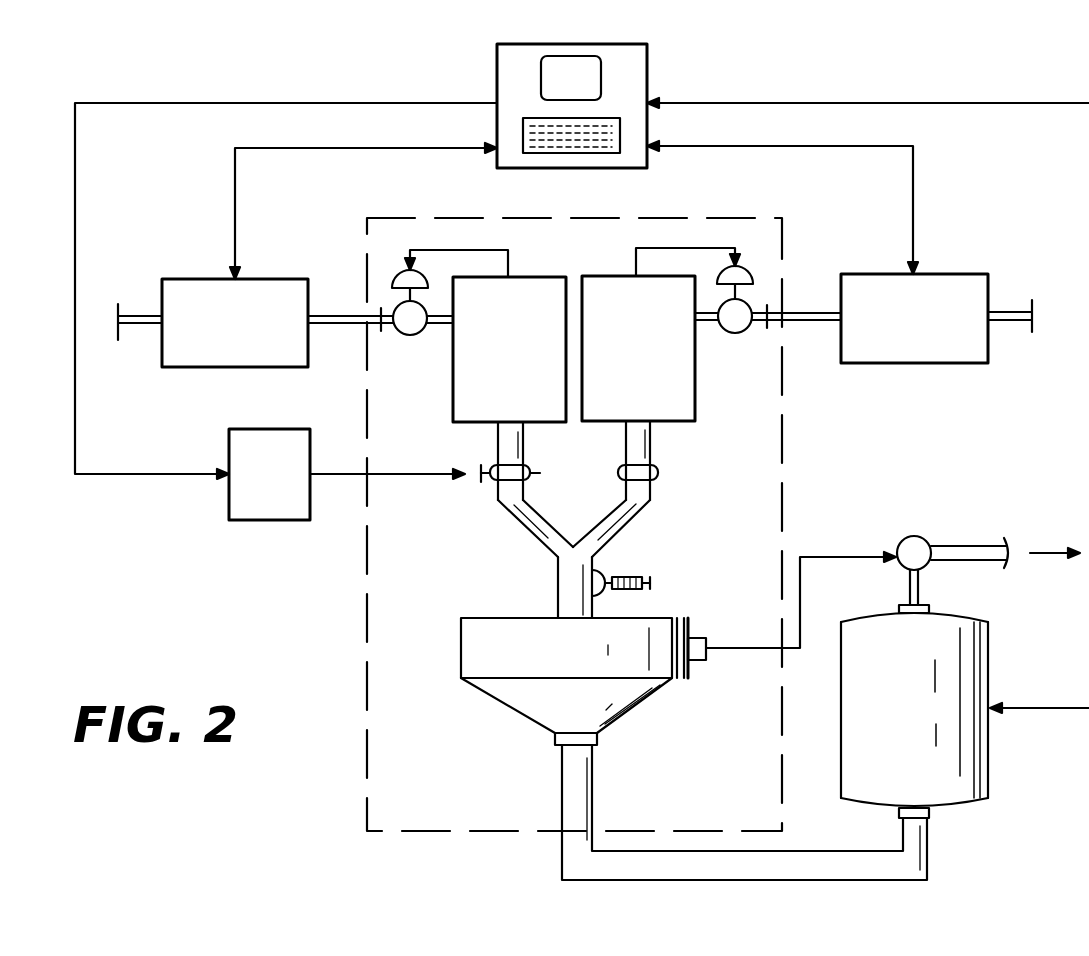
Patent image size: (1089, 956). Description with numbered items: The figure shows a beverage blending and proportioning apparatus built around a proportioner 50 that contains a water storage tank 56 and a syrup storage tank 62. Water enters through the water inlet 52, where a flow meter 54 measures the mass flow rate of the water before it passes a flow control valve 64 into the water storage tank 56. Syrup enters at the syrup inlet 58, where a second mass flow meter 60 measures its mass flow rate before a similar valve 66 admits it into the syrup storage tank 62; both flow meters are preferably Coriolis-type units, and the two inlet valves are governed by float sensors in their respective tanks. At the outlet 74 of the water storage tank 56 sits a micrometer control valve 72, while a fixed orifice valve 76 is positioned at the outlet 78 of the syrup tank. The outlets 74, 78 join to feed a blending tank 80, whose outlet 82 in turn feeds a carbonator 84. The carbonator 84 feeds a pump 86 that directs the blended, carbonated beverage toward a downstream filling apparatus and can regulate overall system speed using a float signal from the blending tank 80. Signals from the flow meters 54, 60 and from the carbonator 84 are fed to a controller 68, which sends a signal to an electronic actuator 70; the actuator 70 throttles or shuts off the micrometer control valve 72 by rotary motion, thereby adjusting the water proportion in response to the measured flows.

The proportioner 50 is at (795, 484).
The water inlet 52 is at (140, 313).
The flow meter 54 is at (262, 357).
The water storage tank 56 is at (450, 402).
The syrup inlet 58 is at (1018, 308).
The second mass flow meter 60 is at (982, 265).
The syrup storage tank 62 is at (688, 400).
The flow control valve 64 is at (396, 280).
The valve 66 is at (750, 272).
The controller 68 is at (640, 72).
The electronic actuator 70 is at (266, 506).
The micrometer control valve 72 is at (528, 470).
The outlet 74 is at (530, 520).
The fixed orifice valve 76 is at (656, 470).
The outlet 78 is at (640, 506).
The blending tank 80 is at (684, 612).
The outlet 82 is at (580, 788).
The carbonator 84 is at (982, 762).
The pump 86 is at (916, 544).